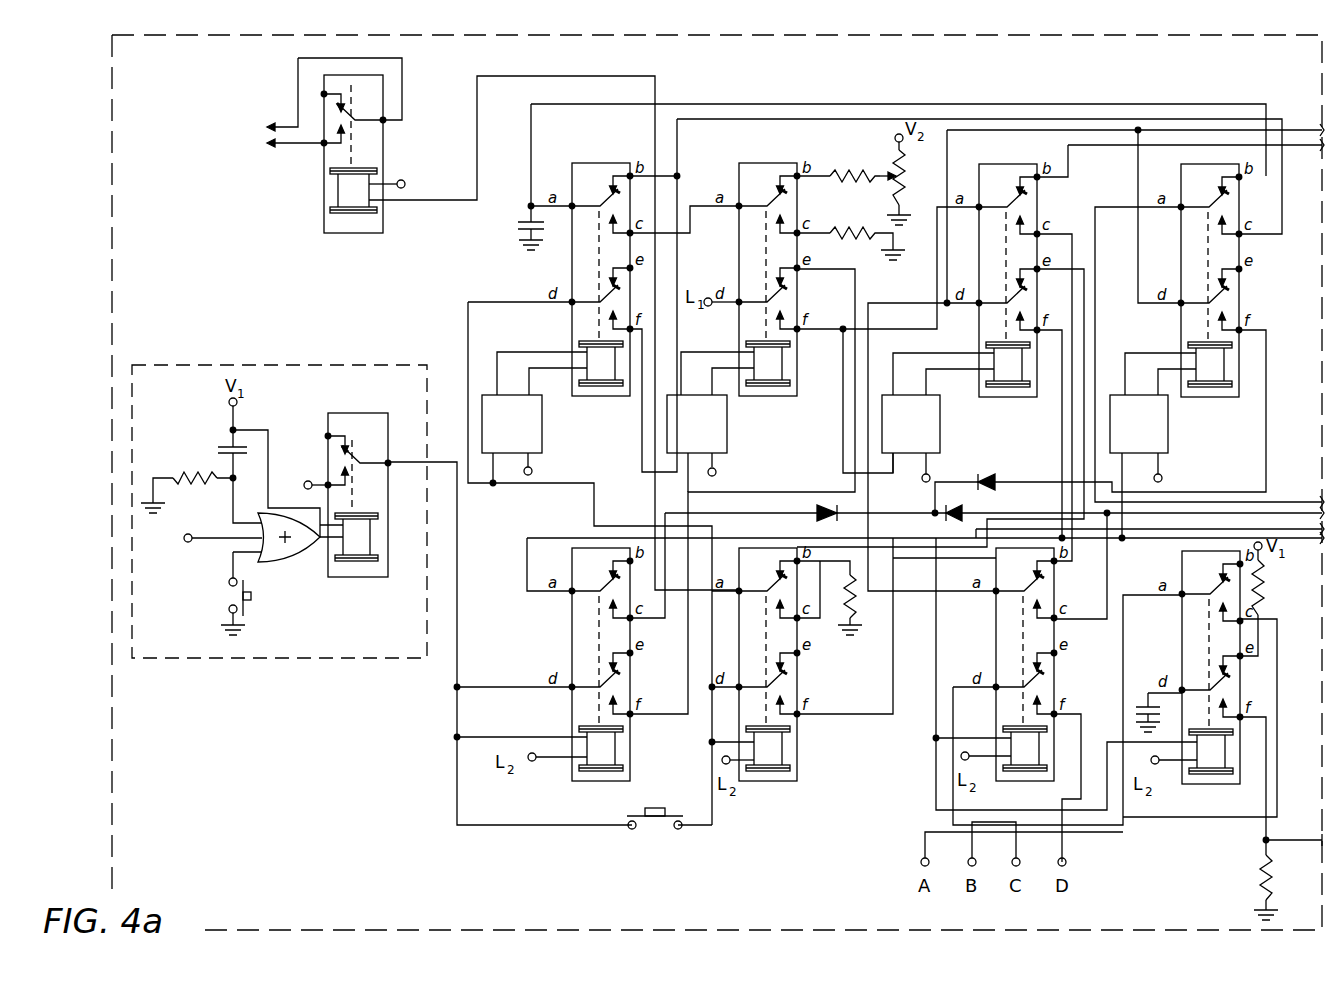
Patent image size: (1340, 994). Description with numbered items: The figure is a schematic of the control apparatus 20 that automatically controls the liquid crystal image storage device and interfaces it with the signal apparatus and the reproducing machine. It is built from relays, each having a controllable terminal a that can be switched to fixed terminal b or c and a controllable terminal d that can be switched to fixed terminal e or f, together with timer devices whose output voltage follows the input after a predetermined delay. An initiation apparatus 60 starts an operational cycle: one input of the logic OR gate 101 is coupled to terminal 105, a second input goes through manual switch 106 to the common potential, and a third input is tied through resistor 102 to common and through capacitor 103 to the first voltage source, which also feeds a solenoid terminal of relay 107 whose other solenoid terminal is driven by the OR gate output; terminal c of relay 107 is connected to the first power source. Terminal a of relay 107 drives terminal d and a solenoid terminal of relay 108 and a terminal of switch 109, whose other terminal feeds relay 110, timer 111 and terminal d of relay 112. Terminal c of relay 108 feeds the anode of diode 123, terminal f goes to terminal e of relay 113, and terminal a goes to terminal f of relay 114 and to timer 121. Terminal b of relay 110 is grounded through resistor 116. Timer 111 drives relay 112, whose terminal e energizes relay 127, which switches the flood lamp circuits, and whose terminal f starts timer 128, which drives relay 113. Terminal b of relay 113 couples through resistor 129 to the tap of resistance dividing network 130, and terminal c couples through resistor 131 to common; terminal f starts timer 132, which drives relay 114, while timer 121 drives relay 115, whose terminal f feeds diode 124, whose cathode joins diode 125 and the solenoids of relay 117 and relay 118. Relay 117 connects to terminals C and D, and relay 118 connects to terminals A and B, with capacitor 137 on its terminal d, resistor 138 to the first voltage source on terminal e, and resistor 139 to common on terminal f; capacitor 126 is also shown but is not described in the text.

The control apparatus 20 is at (100, 192).
The initiation apparatus 60 is at (296, 660).
The logic OR gate 101 is at (285, 564).
The resistor 102 is at (190, 474).
The capacitor 103 is at (226, 444).
The terminal 105 is at (185, 542).
The manual switch 106 is at (256, 598).
The relay 107 is at (350, 578).
The relay 108 is at (578, 784).
The switch 109 is at (662, 808).
The relay 110 is at (792, 786).
The timer device D1 111 is at (542, 436).
The relay 112 is at (603, 396).
The relay 113 is at (788, 396).
The relay 114 is at (1015, 398).
The relay 115 is at (1208, 398).
The resistor 116 is at (862, 628).
The relay 117 is at (1008, 786).
The relay 118 is at (1203, 786).
The timer device D4 121 is at (1168, 425).
The diode 123 is at (815, 505).
The diode 124 is at (988, 475).
The diode 125 is at (960, 506).
The capacitor 126 is at (518, 238).
The relay 127 is at (345, 235).
The timer device D2 128 is at (727, 438).
The resistor 129 is at (856, 168).
The resistance dividing network 130 is at (912, 183).
The resistor 131 is at (866, 212).
The timer device D3 132 is at (940, 440).
The capacitor 137 is at (1140, 696).
The resistor 138 is at (1268, 600).
The resistor 139 is at (1276, 890).